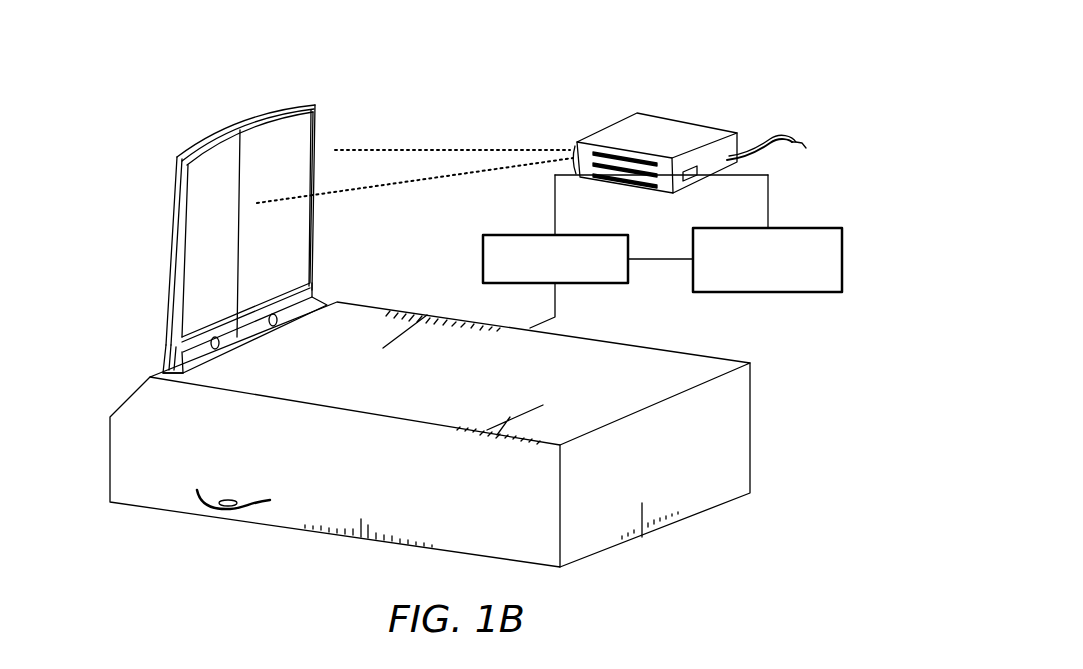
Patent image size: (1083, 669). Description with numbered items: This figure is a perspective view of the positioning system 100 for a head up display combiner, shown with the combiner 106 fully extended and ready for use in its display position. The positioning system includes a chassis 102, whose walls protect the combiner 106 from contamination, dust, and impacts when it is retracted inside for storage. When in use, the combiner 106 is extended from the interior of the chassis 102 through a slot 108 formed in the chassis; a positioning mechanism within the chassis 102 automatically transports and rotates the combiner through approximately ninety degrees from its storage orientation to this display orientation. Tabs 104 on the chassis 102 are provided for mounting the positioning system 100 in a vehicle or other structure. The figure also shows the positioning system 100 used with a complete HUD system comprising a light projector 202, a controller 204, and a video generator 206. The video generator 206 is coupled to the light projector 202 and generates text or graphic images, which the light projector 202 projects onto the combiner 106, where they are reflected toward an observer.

The positioning system 100 is at (114, 302).
The chassis 102 is at (620, 530).
The tabs 104 is at (197, 490).
The combiner 106 is at (320, 122).
The slot 108 is at (163, 368).
The light projector 202 is at (672, 123).
The controller 204 is at (483, 253).
The video generator 206 is at (842, 252).